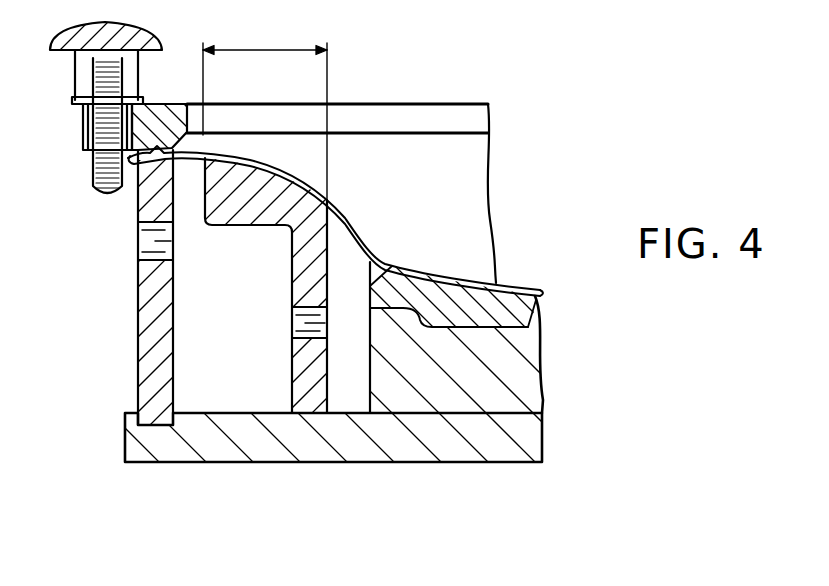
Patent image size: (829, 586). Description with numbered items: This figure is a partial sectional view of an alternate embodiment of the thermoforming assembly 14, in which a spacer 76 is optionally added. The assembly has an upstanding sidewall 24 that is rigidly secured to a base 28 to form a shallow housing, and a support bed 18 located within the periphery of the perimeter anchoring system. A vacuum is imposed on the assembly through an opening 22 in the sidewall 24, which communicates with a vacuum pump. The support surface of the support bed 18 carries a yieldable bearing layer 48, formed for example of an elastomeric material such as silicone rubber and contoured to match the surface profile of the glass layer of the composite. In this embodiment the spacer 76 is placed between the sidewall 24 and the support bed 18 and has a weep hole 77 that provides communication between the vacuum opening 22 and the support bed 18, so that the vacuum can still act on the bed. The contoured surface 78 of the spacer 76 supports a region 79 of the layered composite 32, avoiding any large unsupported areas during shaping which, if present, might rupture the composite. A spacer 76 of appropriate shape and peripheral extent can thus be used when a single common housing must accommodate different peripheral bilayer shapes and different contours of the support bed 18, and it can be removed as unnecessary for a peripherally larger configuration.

The thermoforming assembly 14 is at (108, 398).
The support bed 18 is at (540, 378).
The opening 22 is at (140, 247).
The upstanding sidewall 24 is at (138, 205).
The base 28 is at (545, 442).
The layered composite 32 is at (345, 213).
The yieldable bearing layer 48 is at (440, 290).
The spacer 76 is at (300, 256).
The weep hole 77 is at (296, 320).
The contoured surface 78 is at (250, 172).
The region 79 is at (270, 50).